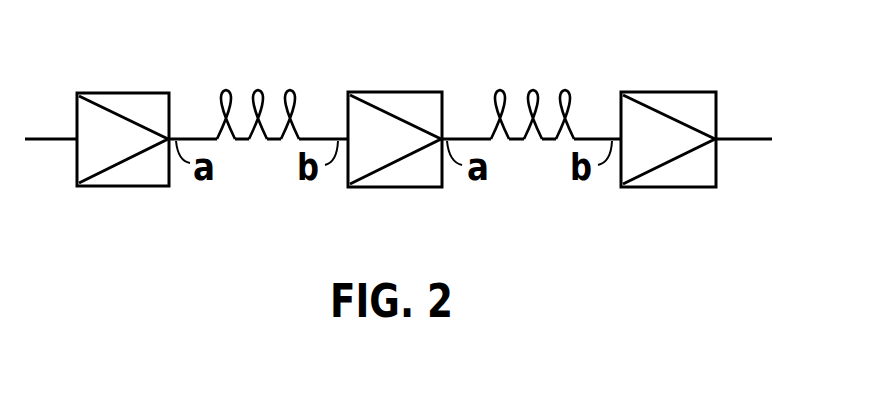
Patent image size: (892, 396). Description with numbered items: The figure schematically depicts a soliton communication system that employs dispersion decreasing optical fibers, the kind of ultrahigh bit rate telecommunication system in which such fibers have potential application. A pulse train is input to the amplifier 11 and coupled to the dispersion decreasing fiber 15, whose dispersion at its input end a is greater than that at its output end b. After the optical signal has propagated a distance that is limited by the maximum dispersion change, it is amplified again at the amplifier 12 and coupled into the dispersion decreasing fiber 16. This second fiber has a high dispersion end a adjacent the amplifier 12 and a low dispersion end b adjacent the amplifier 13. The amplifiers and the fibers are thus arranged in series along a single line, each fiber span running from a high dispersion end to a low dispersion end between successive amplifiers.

The amplifier 11 is at (122, 188).
The amplifier 12 is at (387, 188).
The amplifier 13 is at (680, 188).
The dispersion decreasing fiber 15 is at (226, 56).
The dispersion decreasing fiber 16 is at (550, 55).